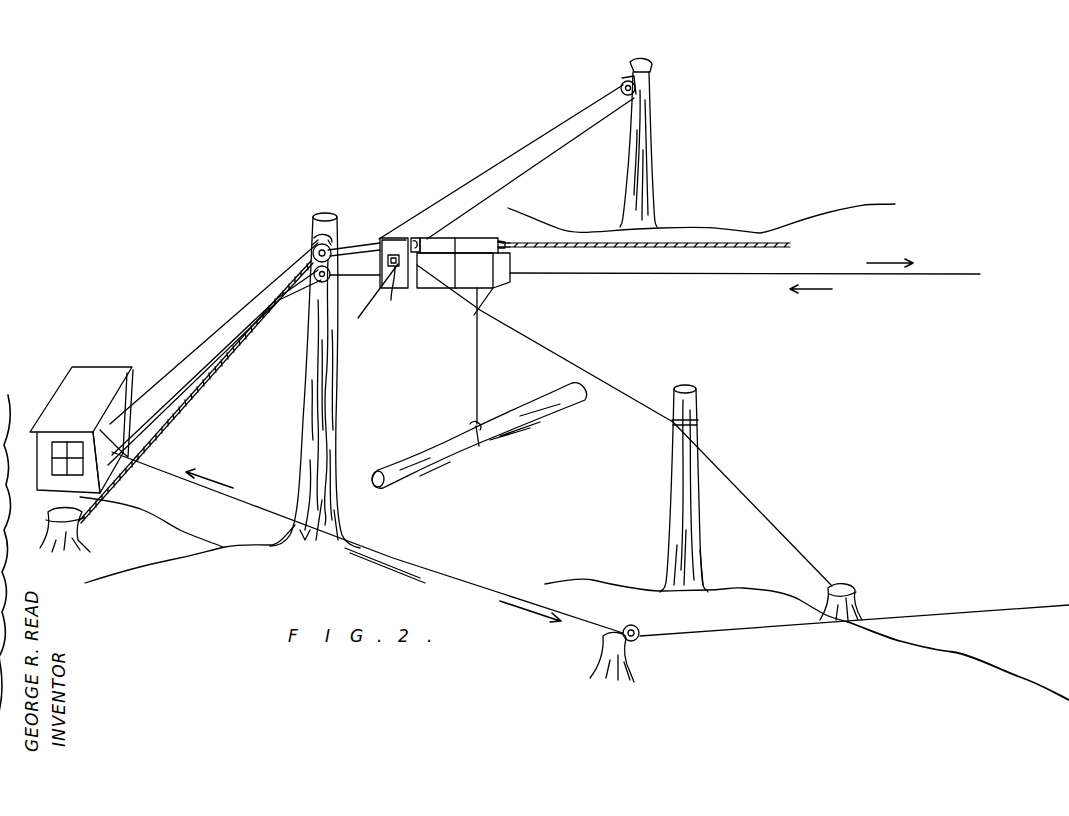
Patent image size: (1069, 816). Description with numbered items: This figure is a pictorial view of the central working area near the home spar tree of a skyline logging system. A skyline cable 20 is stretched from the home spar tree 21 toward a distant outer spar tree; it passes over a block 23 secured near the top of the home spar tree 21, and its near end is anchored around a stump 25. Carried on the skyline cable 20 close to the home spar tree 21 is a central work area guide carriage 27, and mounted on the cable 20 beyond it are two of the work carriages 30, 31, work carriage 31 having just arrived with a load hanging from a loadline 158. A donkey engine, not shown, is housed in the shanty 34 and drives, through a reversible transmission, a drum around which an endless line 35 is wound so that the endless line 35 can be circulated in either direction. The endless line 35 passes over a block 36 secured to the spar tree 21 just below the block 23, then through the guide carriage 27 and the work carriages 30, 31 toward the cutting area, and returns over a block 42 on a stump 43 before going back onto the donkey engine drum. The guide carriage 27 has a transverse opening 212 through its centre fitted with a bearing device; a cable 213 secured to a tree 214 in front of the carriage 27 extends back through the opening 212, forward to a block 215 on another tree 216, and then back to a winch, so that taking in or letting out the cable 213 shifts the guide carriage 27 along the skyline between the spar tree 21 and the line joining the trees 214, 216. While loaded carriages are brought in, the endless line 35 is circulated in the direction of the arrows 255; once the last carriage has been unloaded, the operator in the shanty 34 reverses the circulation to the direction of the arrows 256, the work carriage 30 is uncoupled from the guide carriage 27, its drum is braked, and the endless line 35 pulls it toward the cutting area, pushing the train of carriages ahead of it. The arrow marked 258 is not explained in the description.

The skyline cable 20 is at (193, 393).
The home spar tree 21 is at (328, 389).
The block 23 is at (313, 250).
The stump 25 is at (85, 533).
The central work area guide carriage 27 is at (392, 236).
The work carriage 30 is at (440, 238).
The work carriage 31 is at (490, 241).
The shanty 34 is at (100, 368).
The endless line 35 is at (950, 275).
The block 36 is at (320, 283).
The block 42 is at (640, 628).
The stump 43 is at (630, 658).
The loadline 158 is at (479, 388).
The transverse opening 212 is at (391, 286).
The cable 213 is at (538, 156).
The tree 214 is at (681, 477).
The block 215 is at (622, 82).
The tree 216 is at (646, 157).
The arrows 255 is at (820, 290).
The arrows 256 is at (234, 489).
The direction of travel 258 is at (886, 262).